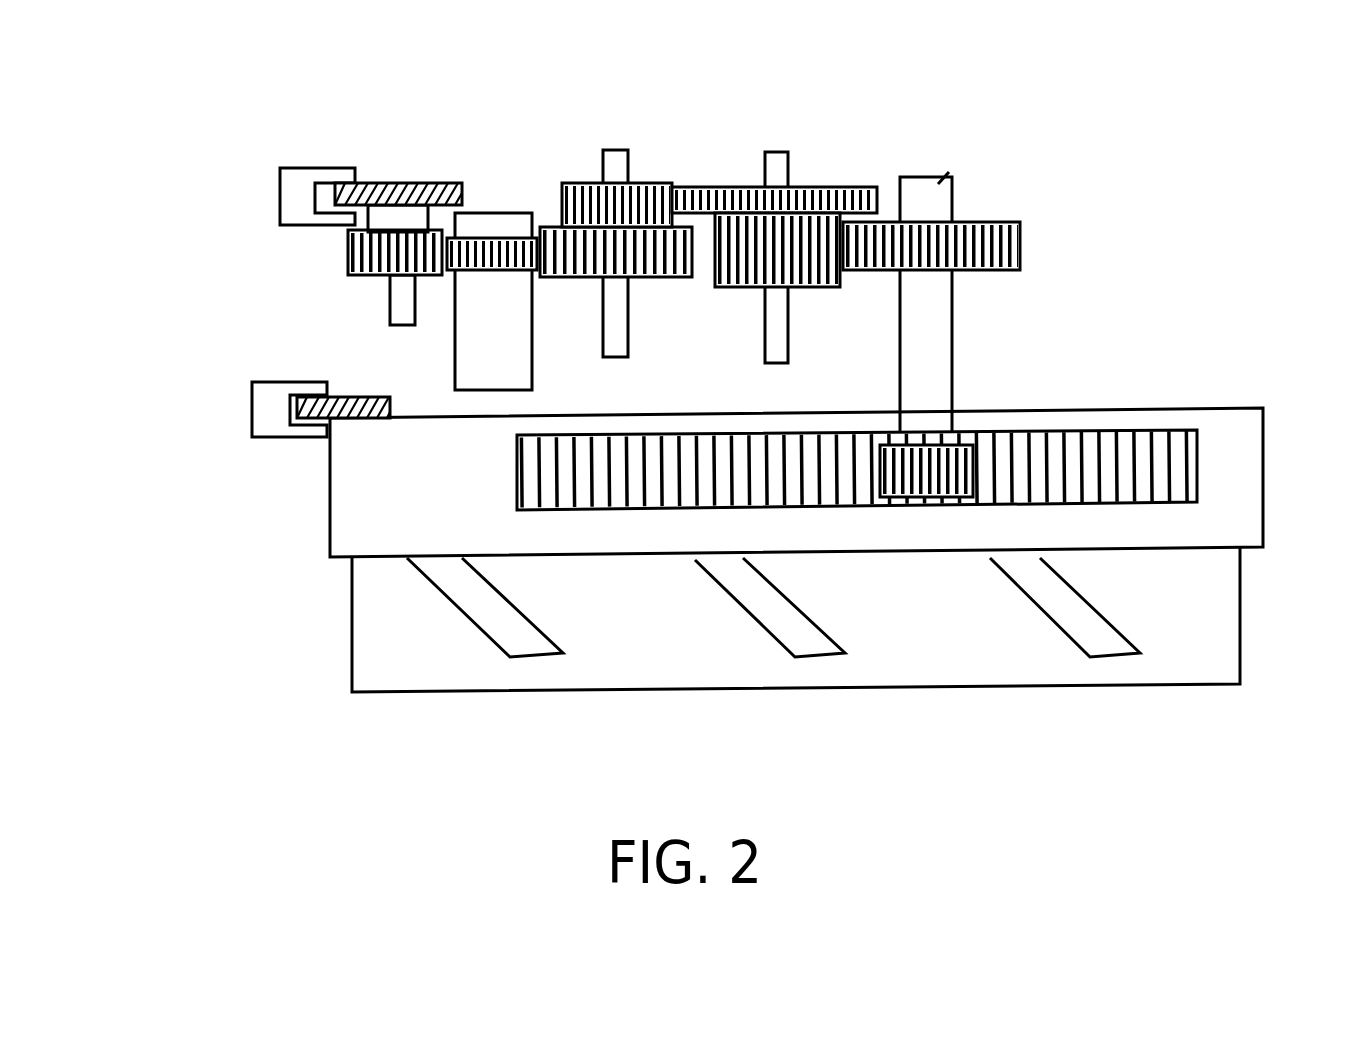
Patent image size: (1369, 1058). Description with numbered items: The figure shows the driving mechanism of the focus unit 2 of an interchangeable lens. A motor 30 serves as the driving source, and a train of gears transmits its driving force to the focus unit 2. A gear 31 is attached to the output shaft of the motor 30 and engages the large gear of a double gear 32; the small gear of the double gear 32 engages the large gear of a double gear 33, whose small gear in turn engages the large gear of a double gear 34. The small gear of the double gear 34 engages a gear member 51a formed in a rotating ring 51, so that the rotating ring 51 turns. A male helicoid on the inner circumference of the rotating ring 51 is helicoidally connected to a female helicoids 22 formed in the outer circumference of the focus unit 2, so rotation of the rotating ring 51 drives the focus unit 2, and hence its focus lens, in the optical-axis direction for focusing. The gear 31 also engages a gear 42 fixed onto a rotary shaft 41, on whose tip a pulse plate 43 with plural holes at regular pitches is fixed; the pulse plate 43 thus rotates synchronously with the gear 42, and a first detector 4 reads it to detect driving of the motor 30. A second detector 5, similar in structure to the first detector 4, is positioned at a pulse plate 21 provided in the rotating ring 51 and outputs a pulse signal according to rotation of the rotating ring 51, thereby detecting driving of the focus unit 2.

The focus unit 2 is at (1242, 630).
The female helicoids 22 is at (823, 657).
The first detector 4 is at (280, 195).
The pulse plate 43 is at (380, 183).
The gear 42 is at (348, 255).
The rotary shaft 41 is at (390, 290).
The motor 30 is at (502, 213).
The gear 31 is at (510, 273).
The double gear 32 is at (587, 183).
The double gear 33 is at (742, 187).
The double gear 34 is at (983, 273).
The rotating ring 51 is at (992, 413).
The gear member 51a is at (1195, 472).
The second detector 5 is at (252, 407).
The pulse plate 21 is at (350, 397).